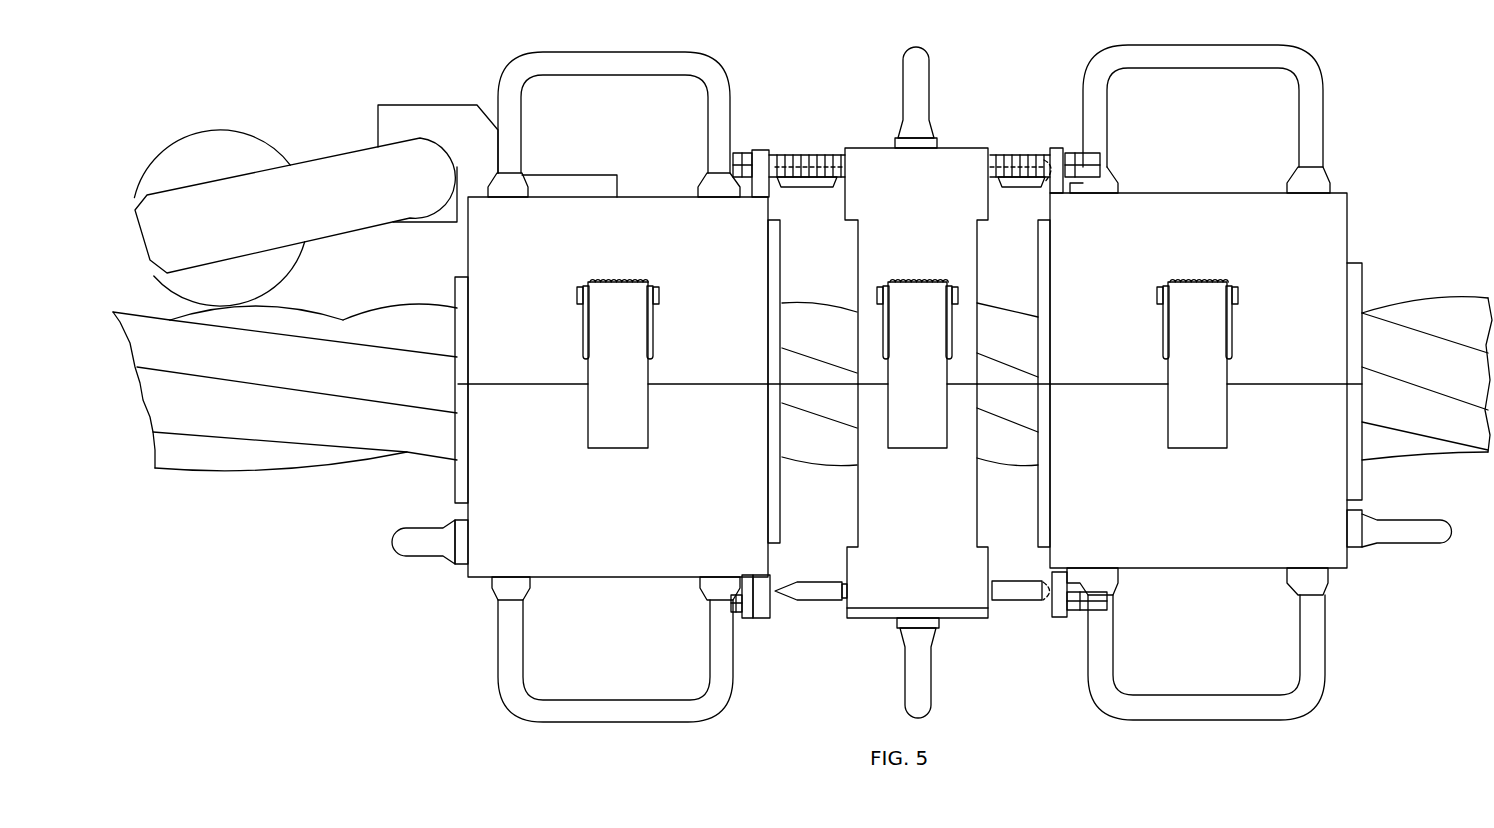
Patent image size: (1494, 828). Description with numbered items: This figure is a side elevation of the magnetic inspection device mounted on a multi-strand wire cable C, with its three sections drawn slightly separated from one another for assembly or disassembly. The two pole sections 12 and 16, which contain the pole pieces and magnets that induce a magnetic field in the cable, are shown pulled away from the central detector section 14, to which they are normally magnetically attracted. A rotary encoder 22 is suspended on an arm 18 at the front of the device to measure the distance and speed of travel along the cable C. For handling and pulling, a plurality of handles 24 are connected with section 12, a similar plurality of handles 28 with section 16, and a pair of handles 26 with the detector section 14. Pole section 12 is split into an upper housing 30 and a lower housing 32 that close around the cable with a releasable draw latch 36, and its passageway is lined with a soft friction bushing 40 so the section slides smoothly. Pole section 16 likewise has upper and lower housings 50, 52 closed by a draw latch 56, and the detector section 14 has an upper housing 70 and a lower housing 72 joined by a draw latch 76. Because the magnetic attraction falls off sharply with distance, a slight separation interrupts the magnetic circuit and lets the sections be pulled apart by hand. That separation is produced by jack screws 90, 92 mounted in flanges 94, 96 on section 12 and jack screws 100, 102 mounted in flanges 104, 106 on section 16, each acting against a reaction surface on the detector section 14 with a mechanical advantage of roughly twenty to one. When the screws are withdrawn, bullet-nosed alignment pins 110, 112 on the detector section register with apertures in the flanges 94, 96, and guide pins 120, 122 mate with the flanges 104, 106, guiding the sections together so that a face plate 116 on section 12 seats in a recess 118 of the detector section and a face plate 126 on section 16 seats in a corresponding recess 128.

The pole section 12 is at (883, 399).
The detector section 14 is at (948, 400).
The pole section 16 is at (1221, 367).
The arm 18 is at (342, 160).
The rotary encoder 22 is at (245, 152).
The handles 24 is at (670, 22).
The handles 26 is at (933, 58).
The handles 28 is at (1255, 45).
The upper housing 30 is at (523, 242).
The lower housing 32 is at (523, 485).
The draw latch 36 is at (633, 368).
The friction bushing 40 is at (457, 283).
The upper housing 50 is at (1311, 270).
The lower housing 52 is at (1311, 492).
The draw latch 56 is at (1207, 350).
The upper housing 70 is at (937, 204).
The lower housing 72 is at (935, 494).
The draw latch 76 is at (927, 350).
The jack screw 90 is at (742, 152).
The jack screw 92 is at (733, 614).
The flange 94 is at (760, 149).
The flange 96 is at (760, 612).
The jack screw 100 is at (1093, 152).
The jack screw 102 is at (1108, 618).
The flange 104 is at (1052, 152).
The flange 106 is at (1062, 617).
The alignment pin 110 is at (818, 192).
The alignment pin 112 is at (820, 578).
The face plate 116 is at (773, 265).
The recess 118 is at (858, 262).
The guide pin 120 is at (1027, 188).
The guide pin 122 is at (1013, 578).
The face plate 126 is at (1042, 238).
The recess 128 is at (982, 236).
The wire cable C is at (268, 450).